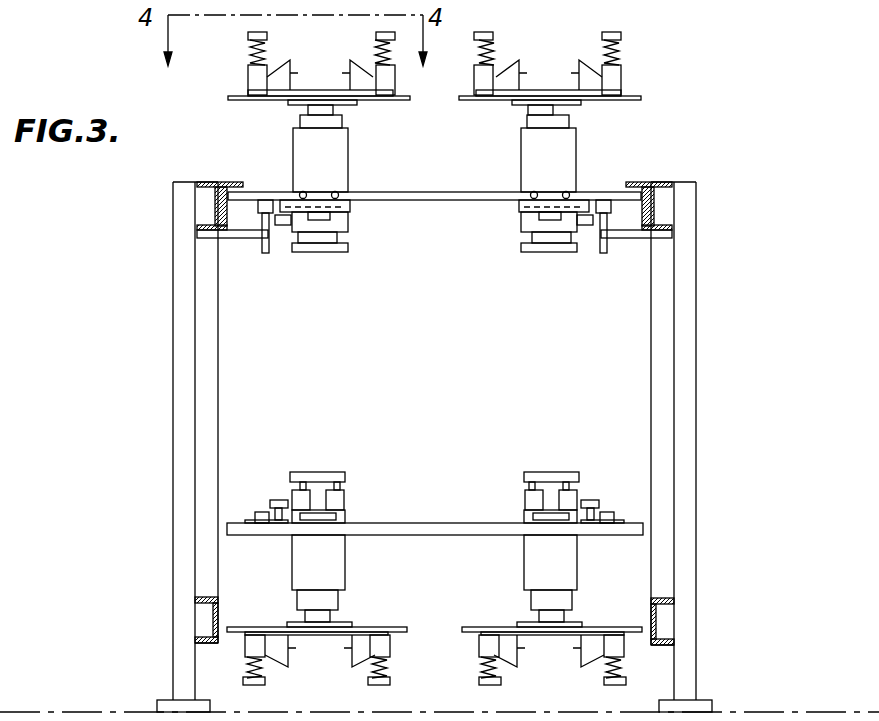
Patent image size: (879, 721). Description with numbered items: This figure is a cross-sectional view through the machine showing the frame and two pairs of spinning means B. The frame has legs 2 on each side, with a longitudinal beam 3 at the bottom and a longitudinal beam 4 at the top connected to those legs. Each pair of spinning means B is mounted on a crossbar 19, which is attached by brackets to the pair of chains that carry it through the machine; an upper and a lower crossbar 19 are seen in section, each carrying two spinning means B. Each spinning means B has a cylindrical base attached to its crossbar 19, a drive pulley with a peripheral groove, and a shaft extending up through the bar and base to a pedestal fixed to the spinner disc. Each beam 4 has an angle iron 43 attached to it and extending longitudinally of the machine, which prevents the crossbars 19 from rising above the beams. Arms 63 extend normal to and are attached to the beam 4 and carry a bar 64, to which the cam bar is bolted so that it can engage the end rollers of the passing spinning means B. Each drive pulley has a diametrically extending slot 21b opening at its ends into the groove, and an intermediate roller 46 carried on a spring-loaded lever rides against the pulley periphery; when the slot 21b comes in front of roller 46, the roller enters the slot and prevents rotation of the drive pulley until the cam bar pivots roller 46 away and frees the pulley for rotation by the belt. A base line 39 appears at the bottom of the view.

The legs 2 is at (175, 432).
The longitudinal beam 3 is at (200, 618).
The longitudinal beam 4 is at (208, 182).
The angle iron 43 is at (240, 182).
The arms 63 is at (240, 240).
The bar 64 is at (266, 253).
The crossbar 19 is at (458, 203).
The spinning means B is at (518, 157).
The slot 21b is at (320, 496).
The intermediate roller 46 is at (278, 500).
The base line 39 is at (795, 716).